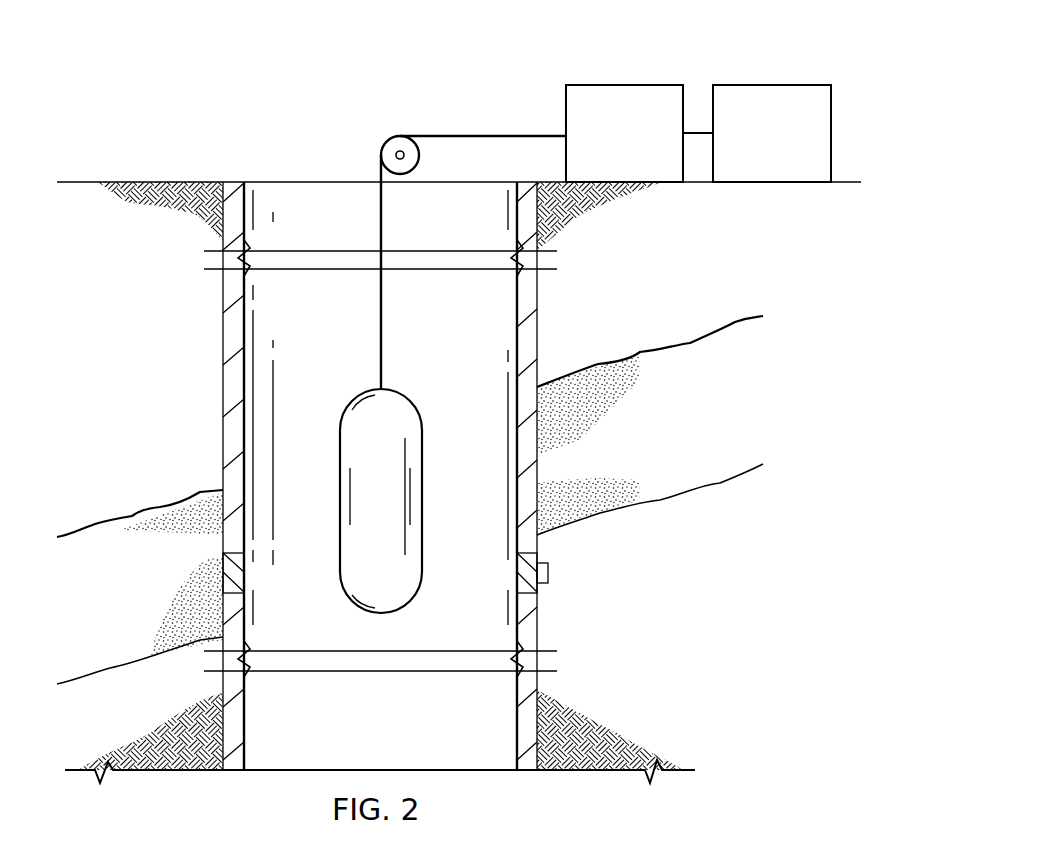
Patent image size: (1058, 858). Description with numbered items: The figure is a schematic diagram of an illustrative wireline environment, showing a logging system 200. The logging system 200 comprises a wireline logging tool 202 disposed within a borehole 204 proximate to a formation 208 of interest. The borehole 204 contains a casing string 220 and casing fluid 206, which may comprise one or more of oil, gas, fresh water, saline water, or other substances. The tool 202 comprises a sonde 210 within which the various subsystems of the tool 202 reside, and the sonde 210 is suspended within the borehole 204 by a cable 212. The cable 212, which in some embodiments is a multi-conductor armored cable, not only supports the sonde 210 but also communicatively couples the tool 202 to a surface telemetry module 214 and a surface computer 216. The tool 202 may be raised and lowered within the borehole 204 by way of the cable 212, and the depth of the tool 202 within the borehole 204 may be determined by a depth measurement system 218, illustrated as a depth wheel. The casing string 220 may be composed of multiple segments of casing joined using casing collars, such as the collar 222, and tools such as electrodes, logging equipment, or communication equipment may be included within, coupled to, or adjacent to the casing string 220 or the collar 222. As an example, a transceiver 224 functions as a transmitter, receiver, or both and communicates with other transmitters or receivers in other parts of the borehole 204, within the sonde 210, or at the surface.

The logging system 200 is at (163, 93).
The wireline logging tool 202 is at (435, 369).
The borehole 204 is at (310, 158).
The casing fluid 206 is at (493, 519).
The formation 208 is at (663, 442).
The sonde 210 is at (363, 388).
The cable 212 is at (380, 218).
The surface telemetry module 214 is at (625, 85).
The surface computer 216 is at (772, 85).
The depth measurement system 218 is at (420, 152).
The casing string 220 is at (232, 338).
The collar 222 is at (240, 573).
The transceiver 224 is at (548, 577).